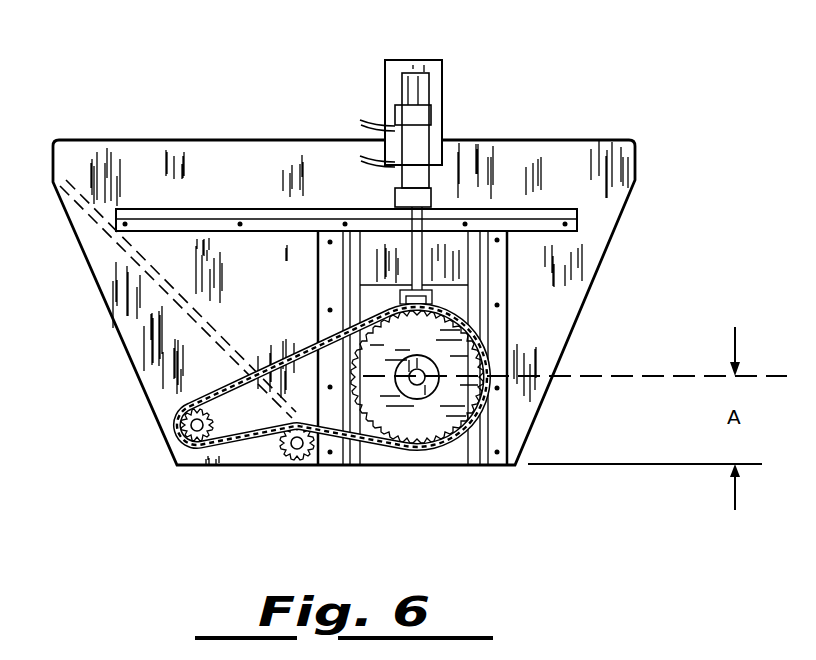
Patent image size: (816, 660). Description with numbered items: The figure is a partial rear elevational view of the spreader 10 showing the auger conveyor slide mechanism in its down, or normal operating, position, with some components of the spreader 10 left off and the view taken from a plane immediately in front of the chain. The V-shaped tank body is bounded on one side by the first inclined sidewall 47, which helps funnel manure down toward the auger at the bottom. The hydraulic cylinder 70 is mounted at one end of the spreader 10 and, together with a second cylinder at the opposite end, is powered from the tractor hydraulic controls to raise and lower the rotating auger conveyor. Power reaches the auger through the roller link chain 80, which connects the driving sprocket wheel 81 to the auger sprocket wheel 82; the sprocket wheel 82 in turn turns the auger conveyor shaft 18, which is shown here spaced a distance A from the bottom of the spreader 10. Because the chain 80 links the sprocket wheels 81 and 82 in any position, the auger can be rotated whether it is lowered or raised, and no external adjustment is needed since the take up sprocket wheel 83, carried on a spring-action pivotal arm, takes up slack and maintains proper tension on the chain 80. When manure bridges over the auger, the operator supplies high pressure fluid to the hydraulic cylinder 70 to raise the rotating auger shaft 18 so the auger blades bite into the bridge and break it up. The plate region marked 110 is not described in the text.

The spreader 10 is at (577, 100).
The mounting plate 110 is at (262, 188).
The hydraulic cylinder 70 is at (430, 117).
The first inclined sidewall 47 is at (158, 290).
The roller link chain 80 is at (293, 350).
The auger conveyor shaft 18 is at (424, 372).
The driving sprocket wheel 81 is at (242, 446).
The auger sprocket wheel 82 is at (417, 418).
The take up sprocket wheel 83 is at (300, 458).